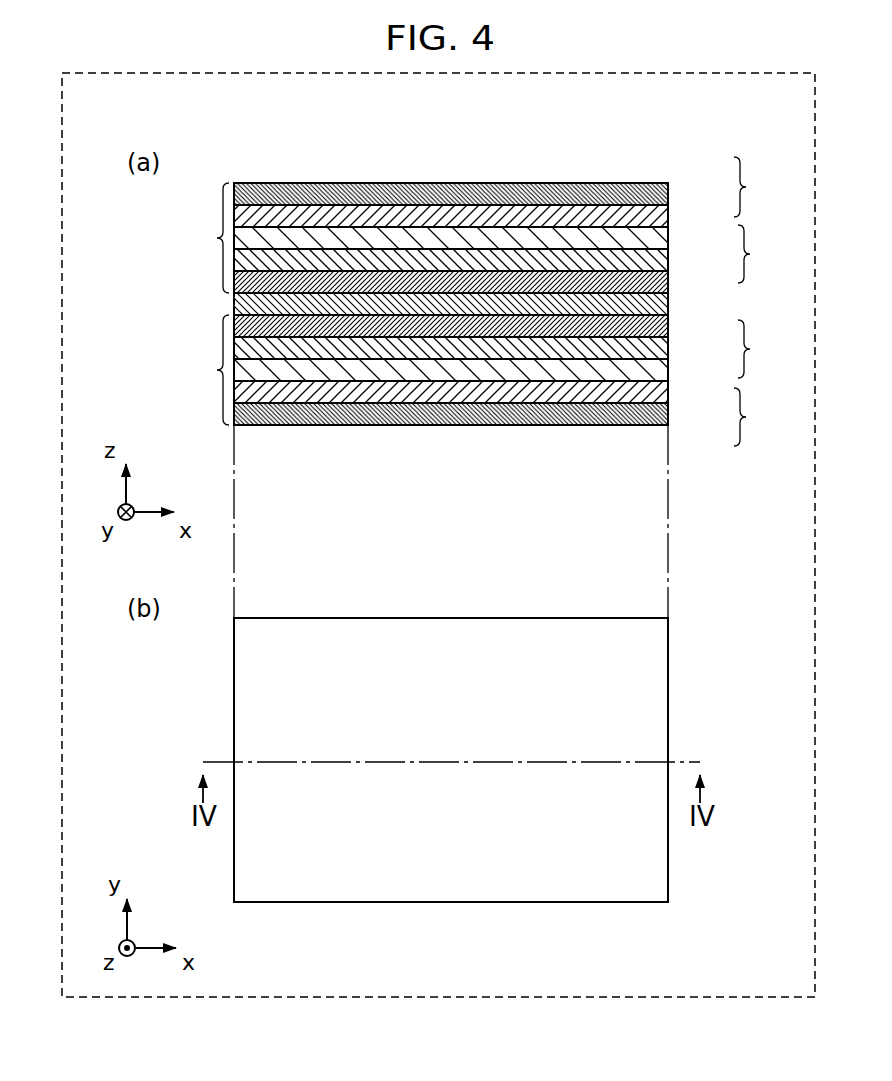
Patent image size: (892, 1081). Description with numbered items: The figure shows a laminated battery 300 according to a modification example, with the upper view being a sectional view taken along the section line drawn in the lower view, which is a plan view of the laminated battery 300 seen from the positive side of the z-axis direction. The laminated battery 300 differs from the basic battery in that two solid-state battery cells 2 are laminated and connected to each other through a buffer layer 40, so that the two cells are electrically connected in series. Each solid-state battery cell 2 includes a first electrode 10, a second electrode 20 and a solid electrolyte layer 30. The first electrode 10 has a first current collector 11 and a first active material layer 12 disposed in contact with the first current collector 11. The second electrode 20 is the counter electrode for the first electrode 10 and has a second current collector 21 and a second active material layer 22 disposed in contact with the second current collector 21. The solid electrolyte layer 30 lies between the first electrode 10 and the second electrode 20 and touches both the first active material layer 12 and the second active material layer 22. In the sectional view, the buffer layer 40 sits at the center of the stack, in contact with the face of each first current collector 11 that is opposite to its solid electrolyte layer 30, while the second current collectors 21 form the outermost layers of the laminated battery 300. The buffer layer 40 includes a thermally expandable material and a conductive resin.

The laminated battery 300 is at (780, 112).
The solid-state battery cell 2 is at (212, 304).
The first electrode 10 is at (760, 301).
The first current collector 11 is at (668, 283).
The first active material layer 12 is at (668, 262).
The second electrode 20 is at (756, 301).
The second current collector 21 is at (668, 192).
The second active material layer 22 is at (668, 216).
The solid electrolyte layer 30 is at (431, 238).
The buffer layer 40 is at (234, 305).